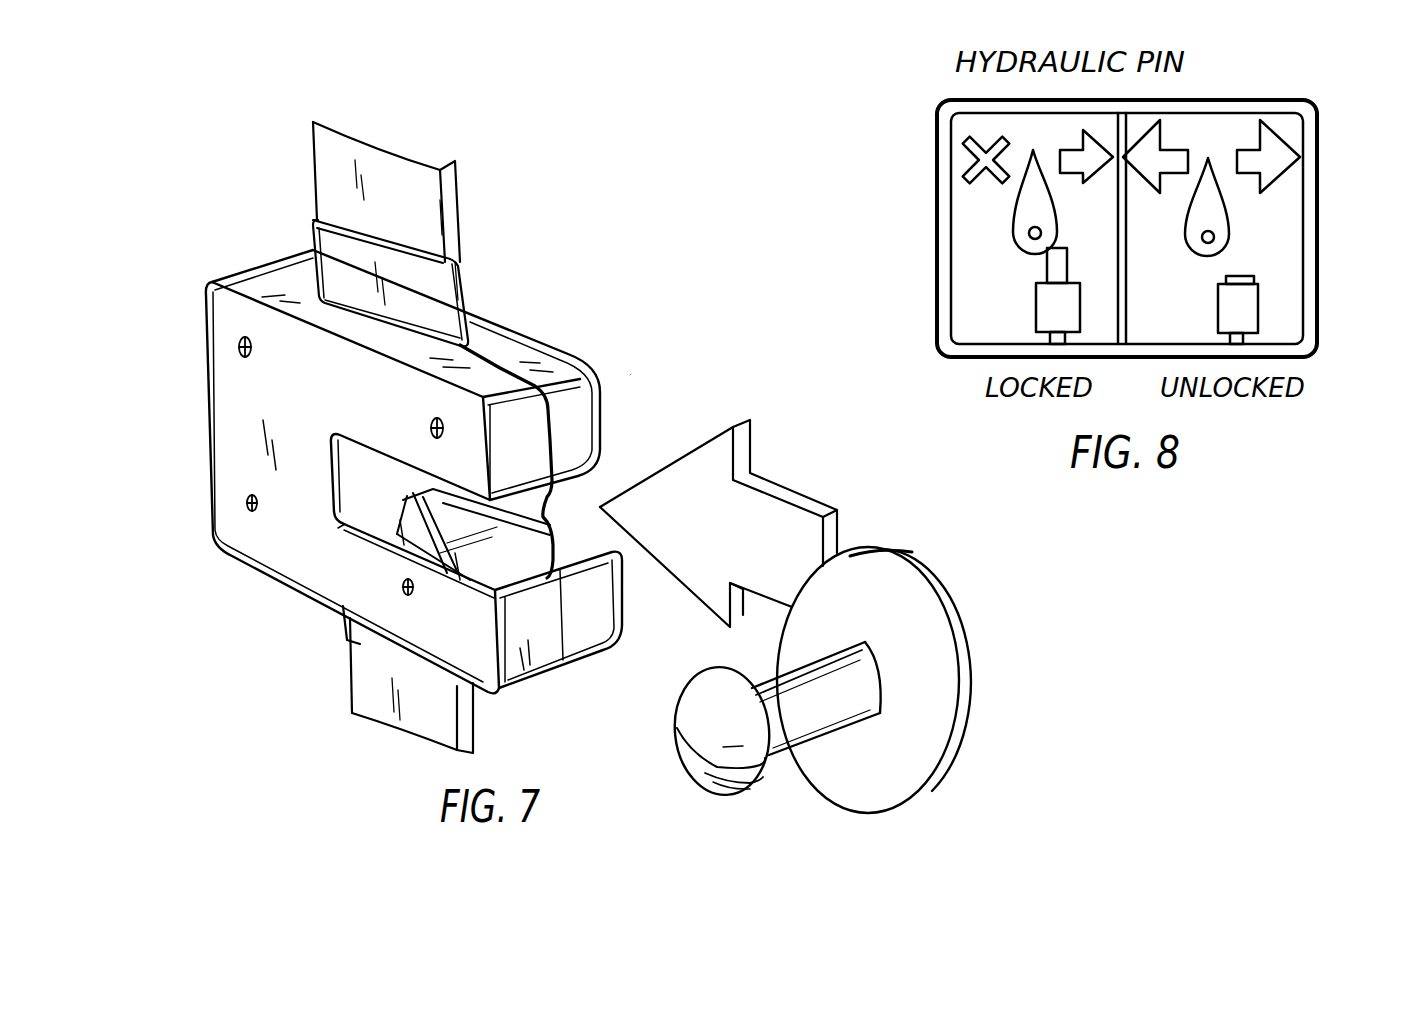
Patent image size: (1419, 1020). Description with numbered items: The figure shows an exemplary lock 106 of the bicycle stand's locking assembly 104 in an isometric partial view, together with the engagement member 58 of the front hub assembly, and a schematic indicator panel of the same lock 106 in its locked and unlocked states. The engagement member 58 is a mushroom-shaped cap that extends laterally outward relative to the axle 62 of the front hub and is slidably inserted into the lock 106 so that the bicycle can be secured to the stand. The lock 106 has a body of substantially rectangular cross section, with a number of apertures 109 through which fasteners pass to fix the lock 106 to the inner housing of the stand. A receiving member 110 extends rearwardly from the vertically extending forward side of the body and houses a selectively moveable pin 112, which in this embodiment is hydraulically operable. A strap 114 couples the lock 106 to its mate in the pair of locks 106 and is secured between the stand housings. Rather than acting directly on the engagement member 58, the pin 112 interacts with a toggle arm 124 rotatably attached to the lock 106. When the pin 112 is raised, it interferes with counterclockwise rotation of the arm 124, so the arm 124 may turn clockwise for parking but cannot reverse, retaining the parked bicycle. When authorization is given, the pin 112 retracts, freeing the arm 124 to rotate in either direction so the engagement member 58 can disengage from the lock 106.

In FIG. 7, the engagement member 58 is at (723, 783).
In FIG. 7, the axle 62 is at (828, 716).
In FIG. 7, the locking assembly 104 is at (632, 374).
In FIG. 7, the lock 106 is at (560, 342).
In FIG. 8, the lock 106 is at (933, 105).
In FIG. 7, the apertures 109 is at (238, 352).
In FIG. 7, the receiving member 110 is at (338, 530).
In FIG. 7, the pin 112 is at (530, 512).
In FIG. 8, the pin 112 is at (1060, 250).
In FIG. 7, the strap 114 is at (358, 186).
In FIG. 8, the toggle arm 124 is at (1020, 223).